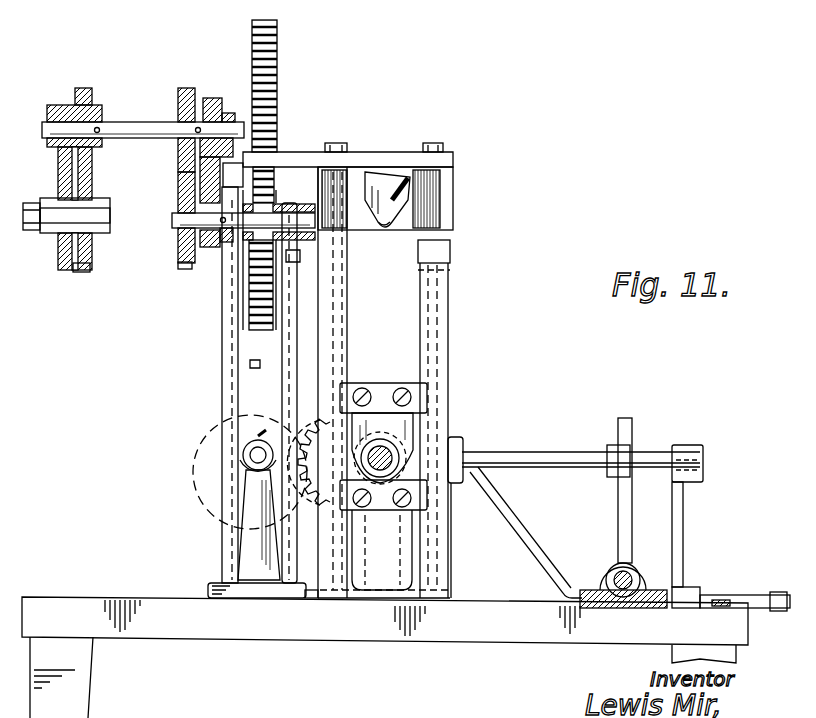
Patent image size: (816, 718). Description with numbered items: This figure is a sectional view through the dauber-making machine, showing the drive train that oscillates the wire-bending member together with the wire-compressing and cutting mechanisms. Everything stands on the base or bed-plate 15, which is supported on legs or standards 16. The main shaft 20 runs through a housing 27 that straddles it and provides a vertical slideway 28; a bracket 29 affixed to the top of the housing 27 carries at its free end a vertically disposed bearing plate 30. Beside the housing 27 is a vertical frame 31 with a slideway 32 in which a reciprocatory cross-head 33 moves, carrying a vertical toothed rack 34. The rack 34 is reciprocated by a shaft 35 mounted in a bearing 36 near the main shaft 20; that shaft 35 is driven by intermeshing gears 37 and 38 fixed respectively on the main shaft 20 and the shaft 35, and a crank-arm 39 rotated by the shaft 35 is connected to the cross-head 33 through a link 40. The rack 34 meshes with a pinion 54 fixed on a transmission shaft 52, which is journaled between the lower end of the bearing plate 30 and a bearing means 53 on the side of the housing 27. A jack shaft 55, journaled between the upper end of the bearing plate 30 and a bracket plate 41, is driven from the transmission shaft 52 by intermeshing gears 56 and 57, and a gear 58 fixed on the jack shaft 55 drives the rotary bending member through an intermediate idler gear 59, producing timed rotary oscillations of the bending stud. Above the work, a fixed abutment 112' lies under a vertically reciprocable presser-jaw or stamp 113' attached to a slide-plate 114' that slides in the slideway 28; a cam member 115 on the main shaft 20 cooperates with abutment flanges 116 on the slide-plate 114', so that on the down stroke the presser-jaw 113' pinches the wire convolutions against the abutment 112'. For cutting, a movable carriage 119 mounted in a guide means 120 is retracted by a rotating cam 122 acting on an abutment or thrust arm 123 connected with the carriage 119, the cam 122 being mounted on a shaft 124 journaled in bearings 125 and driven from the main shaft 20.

The base or bed-plate 15 is at (268, 640).
The legs or standards 16 is at (78, 691).
The main shaft 20 is at (396, 455).
The housing 27 is at (448, 316).
The vertical slideway 28 is at (457, 283).
The bracket 29 is at (288, 162).
The bearing plate 30 is at (200, 186).
The vertical frame 31 is at (222, 333).
The slideway 32 is at (256, 360).
The reciprocatory cross-head 33 is at (247, 285).
The vertical toothed rack 34 is at (278, 96).
The shaft 35 is at (246, 462).
The bearing 36 is at (258, 502).
The gear 37 is at (342, 378).
The gear 38 is at (305, 505).
The crank-arm 39 is at (218, 432).
The link 40 is at (262, 432).
The bracket plate 41 is at (58, 177).
The transmission shaft 52 is at (173, 229).
The bearing means 53 is at (294, 263).
The pinion 54 is at (238, 268).
The jack shaft 55 is at (136, 122).
The gear 56 is at (178, 270).
The gear 57 is at (178, 160).
The gear 58 is at (90, 89).
The intermediate idler gear 59 is at (80, 272).
The abutment 112' is at (446, 219).
The presser-jaw or stamp 113' is at (416, 198).
The slide-plate 114' is at (453, 195).
The cam member 115 is at (410, 450).
The abutment flanges 116 is at (427, 400).
The movable carriage 119 is at (603, 588).
The guide means 120 is at (582, 610).
The rotating cam 122 is at (622, 420).
The abutment or thrust arm 123 is at (618, 518).
The shaft 124 is at (545, 452).
The bearings 125 is at (684, 522).